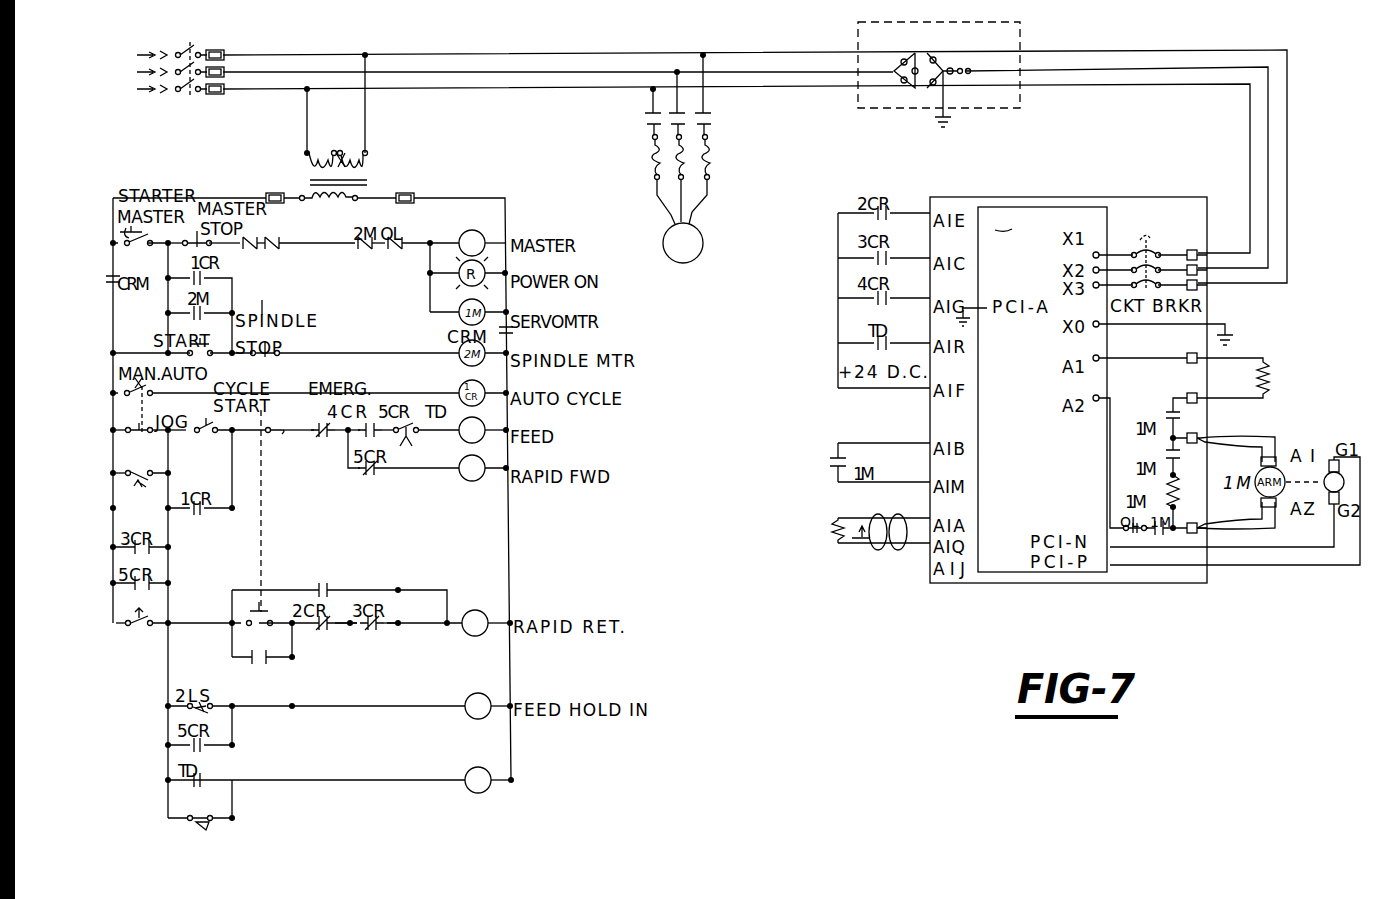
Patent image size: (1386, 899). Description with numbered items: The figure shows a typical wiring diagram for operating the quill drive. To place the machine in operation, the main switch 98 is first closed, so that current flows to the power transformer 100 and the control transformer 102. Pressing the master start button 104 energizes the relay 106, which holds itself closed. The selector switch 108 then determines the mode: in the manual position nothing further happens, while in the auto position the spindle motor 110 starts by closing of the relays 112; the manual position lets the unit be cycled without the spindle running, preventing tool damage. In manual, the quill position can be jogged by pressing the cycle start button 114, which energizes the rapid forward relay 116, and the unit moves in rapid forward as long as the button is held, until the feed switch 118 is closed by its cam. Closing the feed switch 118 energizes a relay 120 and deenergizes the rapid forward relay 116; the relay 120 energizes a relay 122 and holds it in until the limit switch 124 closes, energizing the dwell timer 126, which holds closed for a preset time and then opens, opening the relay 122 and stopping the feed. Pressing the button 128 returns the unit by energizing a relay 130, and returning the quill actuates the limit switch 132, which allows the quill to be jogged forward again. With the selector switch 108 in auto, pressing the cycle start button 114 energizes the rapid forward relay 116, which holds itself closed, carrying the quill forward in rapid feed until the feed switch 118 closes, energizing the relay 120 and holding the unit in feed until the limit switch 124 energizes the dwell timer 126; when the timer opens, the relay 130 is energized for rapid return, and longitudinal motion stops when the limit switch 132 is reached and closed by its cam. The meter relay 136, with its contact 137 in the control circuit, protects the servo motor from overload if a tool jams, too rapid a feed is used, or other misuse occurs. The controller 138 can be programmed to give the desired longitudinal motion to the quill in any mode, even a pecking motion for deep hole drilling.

The main switch 98 is at (188, 97).
The power transformer 100 is at (1018, 96).
The control transformer 102 is at (366, 135).
The master start button 104 is at (127, 248).
The relay 106 is at (460, 230).
The selector switch 108 is at (140, 398).
The spindle motor 110 is at (703, 240).
The relays 112 is at (647, 117).
The cycle start button 114 is at (200, 435).
The rapid forward relay 116 is at (482, 478).
The feed switch 118 is at (269, 671).
The relay 120 is at (490, 700).
The relay 122 is at (484, 436).
The limit switch 124 is at (231, 809).
The dwell timer 126 is at (491, 773).
The button 128 is at (290, 428).
The relay 130 is at (487, 615).
The limit switch 132 is at (165, 498).
The meter relay 136 is at (1287, 358).
The meter relay contact 137 is at (335, 545).
The controller 138 is at (1042, 389).